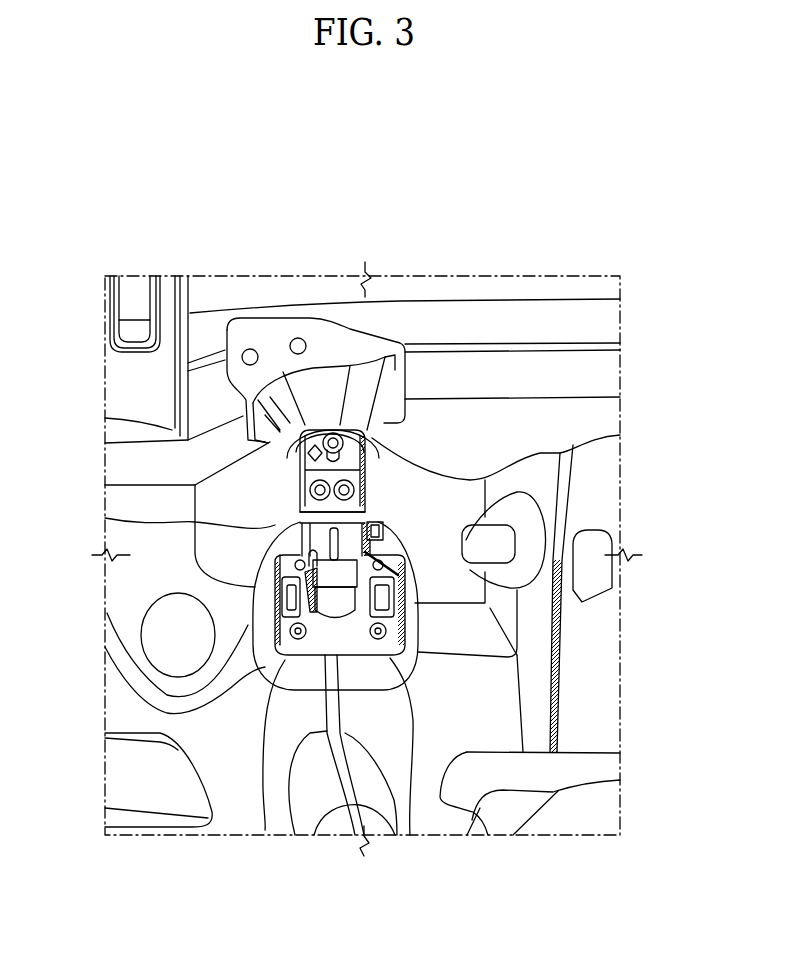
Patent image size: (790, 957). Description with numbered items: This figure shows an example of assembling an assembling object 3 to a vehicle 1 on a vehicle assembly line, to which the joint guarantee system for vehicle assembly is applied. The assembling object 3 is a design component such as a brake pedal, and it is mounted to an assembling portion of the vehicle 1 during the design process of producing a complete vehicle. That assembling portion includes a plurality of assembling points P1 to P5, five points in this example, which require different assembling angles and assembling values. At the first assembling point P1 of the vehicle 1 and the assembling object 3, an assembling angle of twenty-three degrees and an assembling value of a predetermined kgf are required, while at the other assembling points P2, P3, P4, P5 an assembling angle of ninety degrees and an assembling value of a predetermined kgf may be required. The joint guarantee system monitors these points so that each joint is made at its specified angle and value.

The vehicle 1 is at (547, 421).
The assembling object 3 is at (406, 615).
The first assembling point P1 is at (105, 518).
The assembling point P2 is at (323, 432).
The assembling point P3 is at (393, 545).
The assembling point P4 is at (410, 835).
The assembling point P5 is at (265, 830).